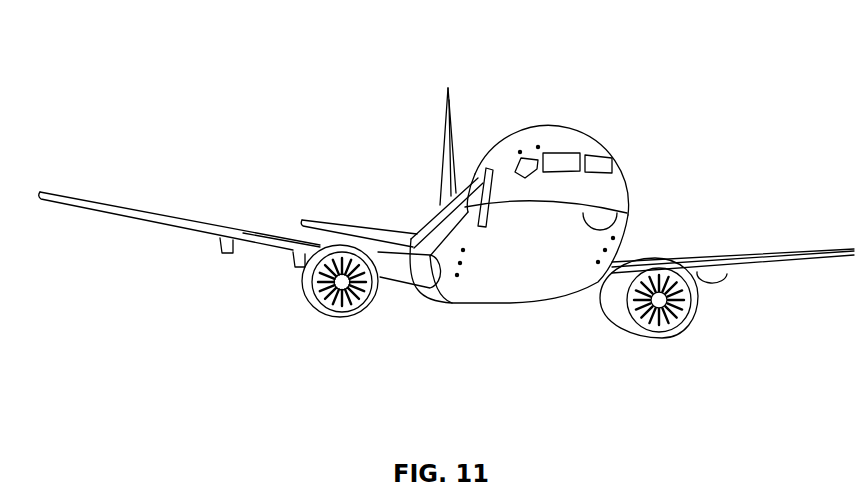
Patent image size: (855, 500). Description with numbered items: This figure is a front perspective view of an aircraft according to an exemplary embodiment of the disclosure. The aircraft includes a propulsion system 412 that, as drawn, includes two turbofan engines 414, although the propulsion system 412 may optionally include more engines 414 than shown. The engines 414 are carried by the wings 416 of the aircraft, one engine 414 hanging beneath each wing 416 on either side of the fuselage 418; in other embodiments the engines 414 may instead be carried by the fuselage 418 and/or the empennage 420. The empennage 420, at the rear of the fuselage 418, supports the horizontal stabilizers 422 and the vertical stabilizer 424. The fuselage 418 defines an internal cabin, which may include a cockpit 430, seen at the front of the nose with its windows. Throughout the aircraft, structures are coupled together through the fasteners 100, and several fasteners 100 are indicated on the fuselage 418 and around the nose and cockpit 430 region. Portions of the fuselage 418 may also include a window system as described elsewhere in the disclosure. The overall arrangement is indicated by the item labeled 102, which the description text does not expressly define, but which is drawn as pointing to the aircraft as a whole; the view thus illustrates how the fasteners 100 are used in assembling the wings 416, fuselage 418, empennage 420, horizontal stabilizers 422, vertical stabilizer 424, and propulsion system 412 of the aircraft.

The fasteners 100 is at (531, 149).
The system 102 is at (250, 73).
The propulsion system 412 is at (738, 343).
The turbofan engines 414 is at (348, 320).
The wings 416 is at (122, 208).
The fuselage 418 is at (625, 178).
The empennage 420 is at (428, 220).
The horizontal stabilizers 422 is at (340, 217).
The vertical stabilizer 424 is at (445, 113).
The cockpit 430 is at (598, 162).